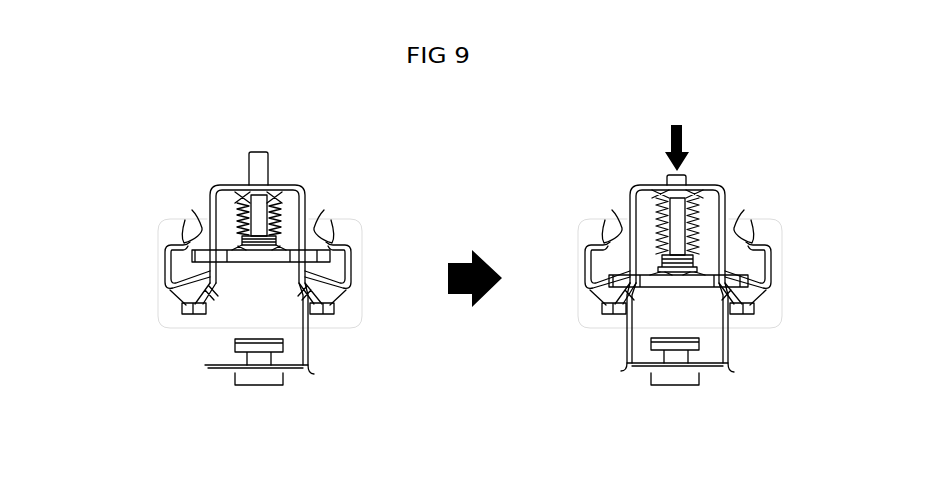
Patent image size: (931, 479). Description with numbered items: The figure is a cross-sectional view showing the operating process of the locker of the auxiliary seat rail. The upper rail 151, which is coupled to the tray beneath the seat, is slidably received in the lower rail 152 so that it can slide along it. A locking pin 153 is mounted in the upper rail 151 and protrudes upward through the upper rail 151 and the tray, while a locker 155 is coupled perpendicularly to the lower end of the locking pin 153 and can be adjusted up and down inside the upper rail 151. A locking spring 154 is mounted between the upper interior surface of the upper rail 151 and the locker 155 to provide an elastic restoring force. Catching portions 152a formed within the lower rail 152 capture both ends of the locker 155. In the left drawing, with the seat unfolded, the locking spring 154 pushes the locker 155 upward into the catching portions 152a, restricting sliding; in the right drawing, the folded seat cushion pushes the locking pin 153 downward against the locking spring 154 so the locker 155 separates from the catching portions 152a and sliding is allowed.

The upper rail 151 is at (288, 190).
The lower rail 152 is at (152, 280).
The catching portion 152a is at (192, 210).
The locking pin 153 is at (259, 163).
The locking spring 154 is at (278, 205).
The locker 155 is at (250, 261).